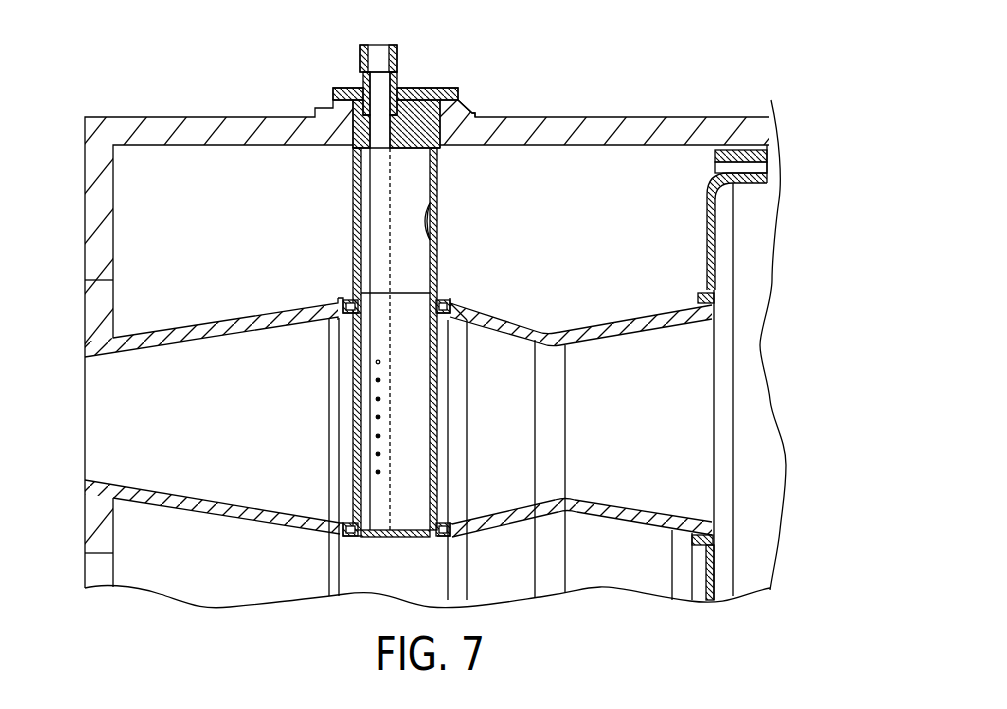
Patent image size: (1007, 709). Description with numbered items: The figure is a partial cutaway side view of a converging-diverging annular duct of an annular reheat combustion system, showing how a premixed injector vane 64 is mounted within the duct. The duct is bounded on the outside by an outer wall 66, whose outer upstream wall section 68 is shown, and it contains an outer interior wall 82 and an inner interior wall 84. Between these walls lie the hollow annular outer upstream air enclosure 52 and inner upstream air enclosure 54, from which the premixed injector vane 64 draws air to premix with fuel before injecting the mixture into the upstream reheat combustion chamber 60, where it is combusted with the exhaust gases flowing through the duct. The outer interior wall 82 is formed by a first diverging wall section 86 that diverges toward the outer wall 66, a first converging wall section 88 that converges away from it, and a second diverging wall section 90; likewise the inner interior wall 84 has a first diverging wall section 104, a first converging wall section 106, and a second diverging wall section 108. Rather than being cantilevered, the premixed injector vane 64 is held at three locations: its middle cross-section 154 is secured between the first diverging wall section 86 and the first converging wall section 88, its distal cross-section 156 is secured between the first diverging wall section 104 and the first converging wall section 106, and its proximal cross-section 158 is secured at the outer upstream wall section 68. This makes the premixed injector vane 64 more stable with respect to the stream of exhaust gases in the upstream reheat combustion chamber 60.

The outer upstream air enclosure 52 is at (247, 237).
The inner upstream air enclosure 54 is at (224, 565).
The upstream reheat combustion chamber 60 is at (244, 432).
The premixed injector vane 64 is at (426, 78).
The outer wall 66 is at (700, 96).
The outer upstream wall section 68 is at (212, 117).
The outer interior wall 82 is at (510, 333).
The inner interior wall 84 is at (516, 508).
The first diverging wall section 86 is at (219, 322).
The first converging wall section 88 is at (470, 311).
The second diverging wall section 90 is at (648, 316).
The first diverging wall section 104 is at (166, 493).
The first converging wall section 106 is at (480, 522).
The second diverging wall section 108 is at (647, 516).
The middle cross-section 154 is at (327, 339).
The distal cross-section 156 is at (344, 530).
The proximal cross-section 158 is at (480, 98).